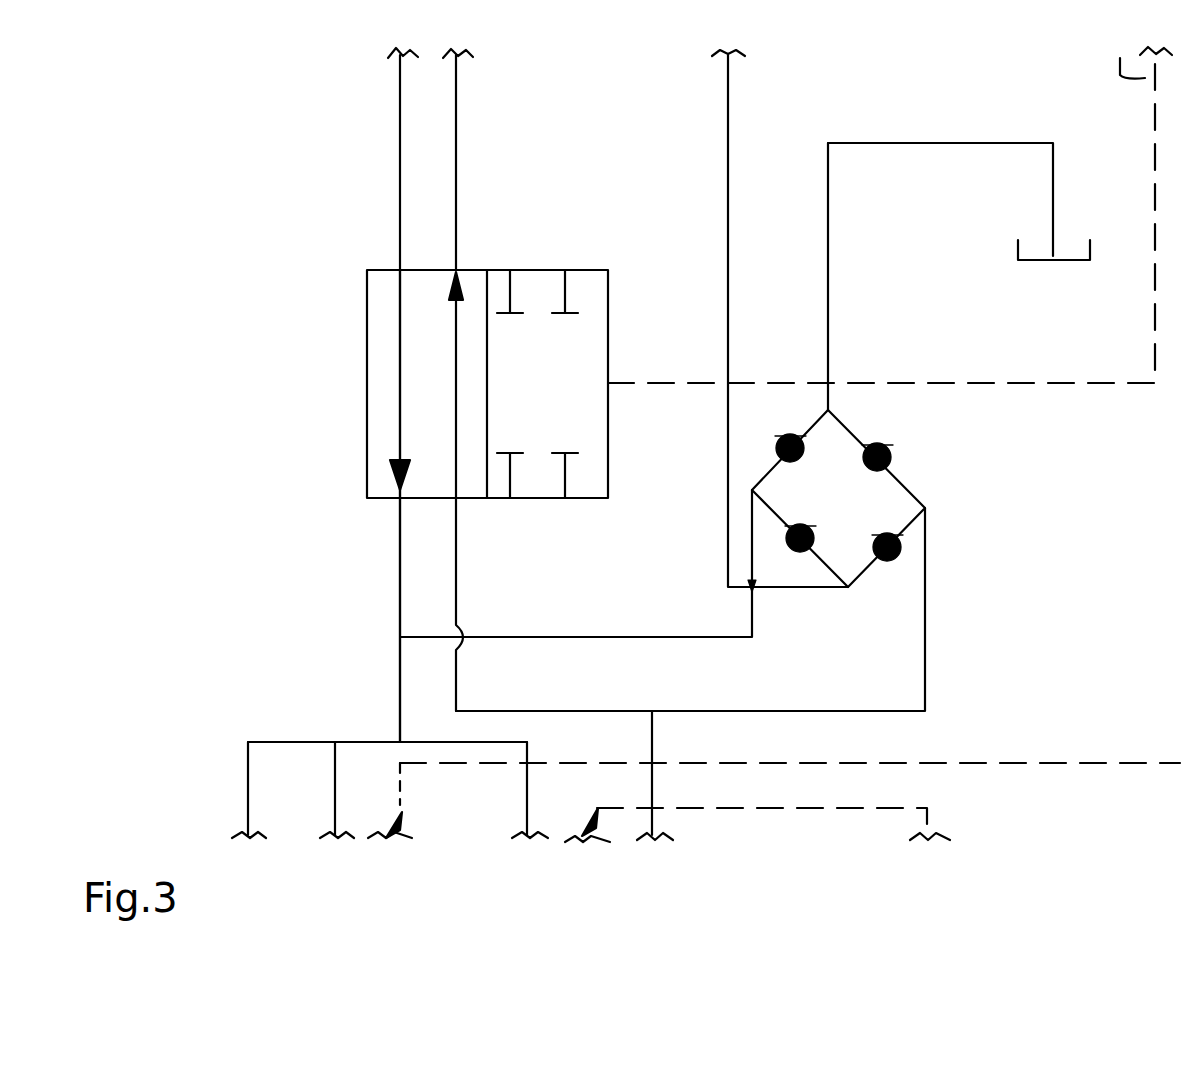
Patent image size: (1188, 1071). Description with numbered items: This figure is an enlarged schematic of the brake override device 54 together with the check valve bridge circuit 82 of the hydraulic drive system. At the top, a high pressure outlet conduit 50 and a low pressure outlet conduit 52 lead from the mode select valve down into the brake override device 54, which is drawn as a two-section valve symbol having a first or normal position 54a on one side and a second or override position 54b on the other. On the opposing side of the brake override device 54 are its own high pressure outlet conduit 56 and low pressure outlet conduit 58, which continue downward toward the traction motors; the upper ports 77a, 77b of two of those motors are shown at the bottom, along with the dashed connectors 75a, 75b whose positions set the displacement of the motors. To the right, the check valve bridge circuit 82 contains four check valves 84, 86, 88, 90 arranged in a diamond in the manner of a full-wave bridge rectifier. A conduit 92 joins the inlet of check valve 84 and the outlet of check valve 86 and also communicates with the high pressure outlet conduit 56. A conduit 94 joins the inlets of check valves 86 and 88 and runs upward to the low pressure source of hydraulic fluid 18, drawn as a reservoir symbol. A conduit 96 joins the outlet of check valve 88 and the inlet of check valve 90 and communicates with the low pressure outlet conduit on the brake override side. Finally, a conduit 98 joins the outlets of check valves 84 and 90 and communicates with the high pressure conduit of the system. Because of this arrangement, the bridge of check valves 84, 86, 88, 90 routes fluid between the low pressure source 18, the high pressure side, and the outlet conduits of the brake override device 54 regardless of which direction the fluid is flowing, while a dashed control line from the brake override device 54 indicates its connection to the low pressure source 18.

The low pressure source of hydraulic fluid 18 is at (1053, 263).
The high pressure outlet conduit 50 is at (400, 185).
The low pressure outlet conduit 52 is at (457, 178).
The brake override device 54 is at (365, 456).
The first or normal position 54a is at (418, 268).
The second or override position 54b is at (532, 270).
The high pressure outlet conduit 56 is at (400, 578).
The low pressure outlet conduit 58 is at (460, 572).
The connector 75a is at (943, 760).
The connector 75b is at (905, 808).
The upper port 77a is at (333, 773).
The upper port 77b is at (527, 793).
The check valve bridge circuit 82 is at (915, 493).
The check valve 84 is at (798, 525).
The check valve 86 is at (786, 436).
The check valve 88 is at (880, 445).
The check valve 90 is at (905, 558).
The conduit 92 is at (752, 505).
The conduit 94 is at (830, 297).
The conduit 96 is at (925, 540).
The conduit 98 is at (728, 117).